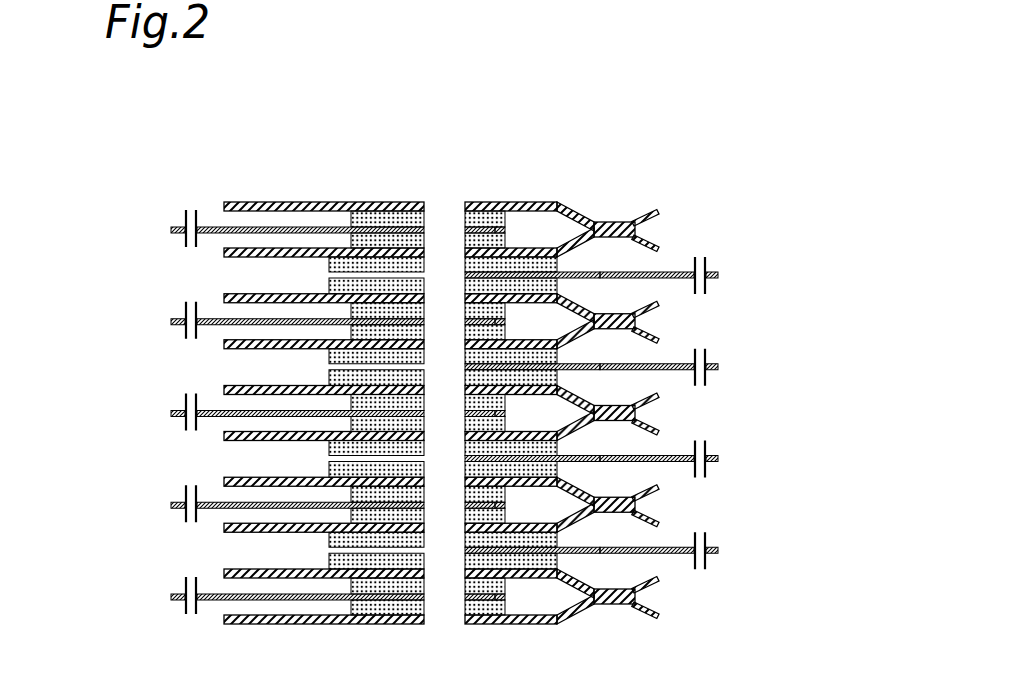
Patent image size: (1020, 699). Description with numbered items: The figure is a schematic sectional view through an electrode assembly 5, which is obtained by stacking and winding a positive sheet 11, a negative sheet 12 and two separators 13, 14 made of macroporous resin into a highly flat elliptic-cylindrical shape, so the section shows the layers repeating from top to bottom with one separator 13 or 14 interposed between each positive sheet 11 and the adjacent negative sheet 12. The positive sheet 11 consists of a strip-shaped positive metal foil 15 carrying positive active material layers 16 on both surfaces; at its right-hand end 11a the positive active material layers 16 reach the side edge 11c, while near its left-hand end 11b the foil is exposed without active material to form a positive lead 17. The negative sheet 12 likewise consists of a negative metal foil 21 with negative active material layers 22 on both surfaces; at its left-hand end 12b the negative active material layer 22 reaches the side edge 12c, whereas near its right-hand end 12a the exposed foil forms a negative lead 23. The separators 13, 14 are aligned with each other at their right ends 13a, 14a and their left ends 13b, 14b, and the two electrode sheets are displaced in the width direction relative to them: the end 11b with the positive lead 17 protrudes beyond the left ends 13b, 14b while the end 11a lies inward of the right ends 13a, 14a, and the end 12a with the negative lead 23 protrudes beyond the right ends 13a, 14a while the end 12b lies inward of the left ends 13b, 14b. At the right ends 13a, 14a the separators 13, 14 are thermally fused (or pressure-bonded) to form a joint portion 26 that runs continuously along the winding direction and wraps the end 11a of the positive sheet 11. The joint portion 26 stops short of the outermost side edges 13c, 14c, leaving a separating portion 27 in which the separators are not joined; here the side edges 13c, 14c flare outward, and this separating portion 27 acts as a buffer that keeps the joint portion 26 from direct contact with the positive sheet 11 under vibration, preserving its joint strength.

The electrode assembly 5 is at (770, 183).
The positive sheet 11 is at (166, 223).
The one end of the positive sheet 11a is at (498, 227).
The other end of the positive sheet 11b is at (217, 226).
The side edge of the positive sheet 11c is at (505, 230).
The negative sheet 12 is at (725, 267).
The other end of the negative sheet 12a is at (678, 272).
The one end of the negative sheet 12b is at (347, 245).
The side edge of the negative sheet 12c is at (329, 270).
The separator 13 is at (265, 192).
The one end of the separator 13a is at (642, 222).
The other end of the separator 13b is at (228, 200).
The side edge of the separator 13c is at (670, 245).
The separator 14 is at (261, 264).
The one end of the separator 14a is at (652, 280).
The other end of the separator 14b is at (226, 246).
The side edge of the separator 14c is at (660, 214).
The positive metal foil 15 is at (401, 228).
The positive active material layers 16 is at (482, 214).
The positive lead 17 is at (192, 214).
The negative metal foil 21 is at (410, 273).
The negative active material layers 22 is at (462, 262).
The negative lead 23 is at (652, 296).
The joint portion 26 is at (617, 222).
The separating portion 27 is at (630, 249).